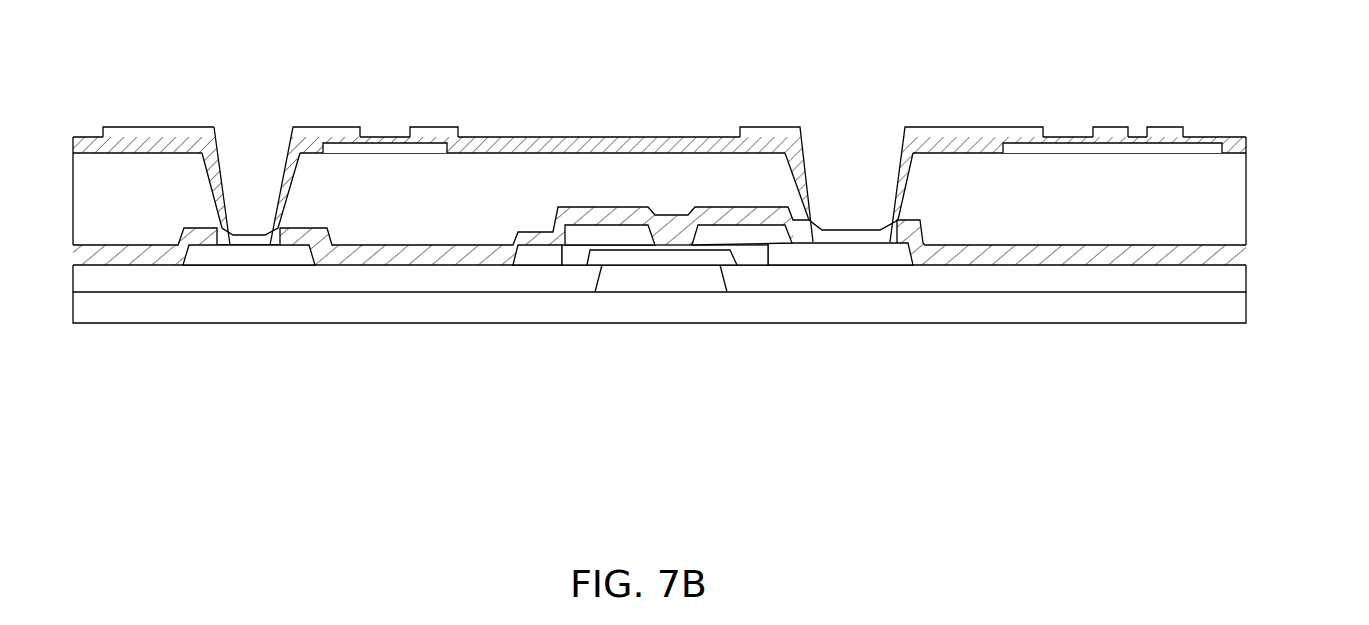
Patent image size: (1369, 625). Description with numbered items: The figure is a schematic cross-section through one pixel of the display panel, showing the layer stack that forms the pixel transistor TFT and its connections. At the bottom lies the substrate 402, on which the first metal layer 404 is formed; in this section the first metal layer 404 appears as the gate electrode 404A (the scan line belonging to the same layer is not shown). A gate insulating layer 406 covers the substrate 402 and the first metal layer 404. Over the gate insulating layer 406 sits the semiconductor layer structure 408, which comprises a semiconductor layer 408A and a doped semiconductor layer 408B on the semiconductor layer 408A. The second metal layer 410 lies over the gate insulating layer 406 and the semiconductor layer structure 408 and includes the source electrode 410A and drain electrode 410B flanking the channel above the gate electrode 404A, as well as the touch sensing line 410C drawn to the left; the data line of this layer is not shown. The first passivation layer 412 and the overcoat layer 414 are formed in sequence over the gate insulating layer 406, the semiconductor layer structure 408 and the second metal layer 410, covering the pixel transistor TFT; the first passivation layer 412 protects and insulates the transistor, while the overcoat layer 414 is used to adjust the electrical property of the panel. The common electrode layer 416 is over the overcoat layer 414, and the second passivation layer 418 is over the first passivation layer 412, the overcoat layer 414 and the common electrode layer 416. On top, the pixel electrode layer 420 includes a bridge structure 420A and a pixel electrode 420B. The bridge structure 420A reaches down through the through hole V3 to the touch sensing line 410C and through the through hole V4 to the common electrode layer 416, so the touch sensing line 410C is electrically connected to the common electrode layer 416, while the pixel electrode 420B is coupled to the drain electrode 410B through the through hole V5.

The substrate 402 is at (1237, 308).
The gate insulating layer 406 is at (1238, 280).
The first metal layer 404 is at (678, 344).
The gate electrode 404A is at (667, 283).
The semiconductor layer structure 408 is at (632, 141).
The semiconductor layer 408A is at (575, 250).
The doped semiconductor layer 408B is at (615, 235).
The second metal layer 410 is at (568, 336).
The source electrode 410A is at (538, 253).
The drain electrode 410B is at (883, 260).
The touch sensing line 410C is at (250, 255).
The first passivation layer 412 is at (1242, 257).
The overcoat layer 414 is at (1243, 198).
The common electrode layer 416 is at (380, 143).
The second passivation layer 418 is at (1247, 148).
The pixel electrode layer 420 is at (662, 101).
The bridge structure 420A is at (160, 127).
The pixel electrode 420B is at (1165, 128).
The through hole V3 is at (313, 128).
The through hole V4 is at (435, 128).
The through hole V5 is at (932, 133).
The pixel transistor TFT is at (632, 256).